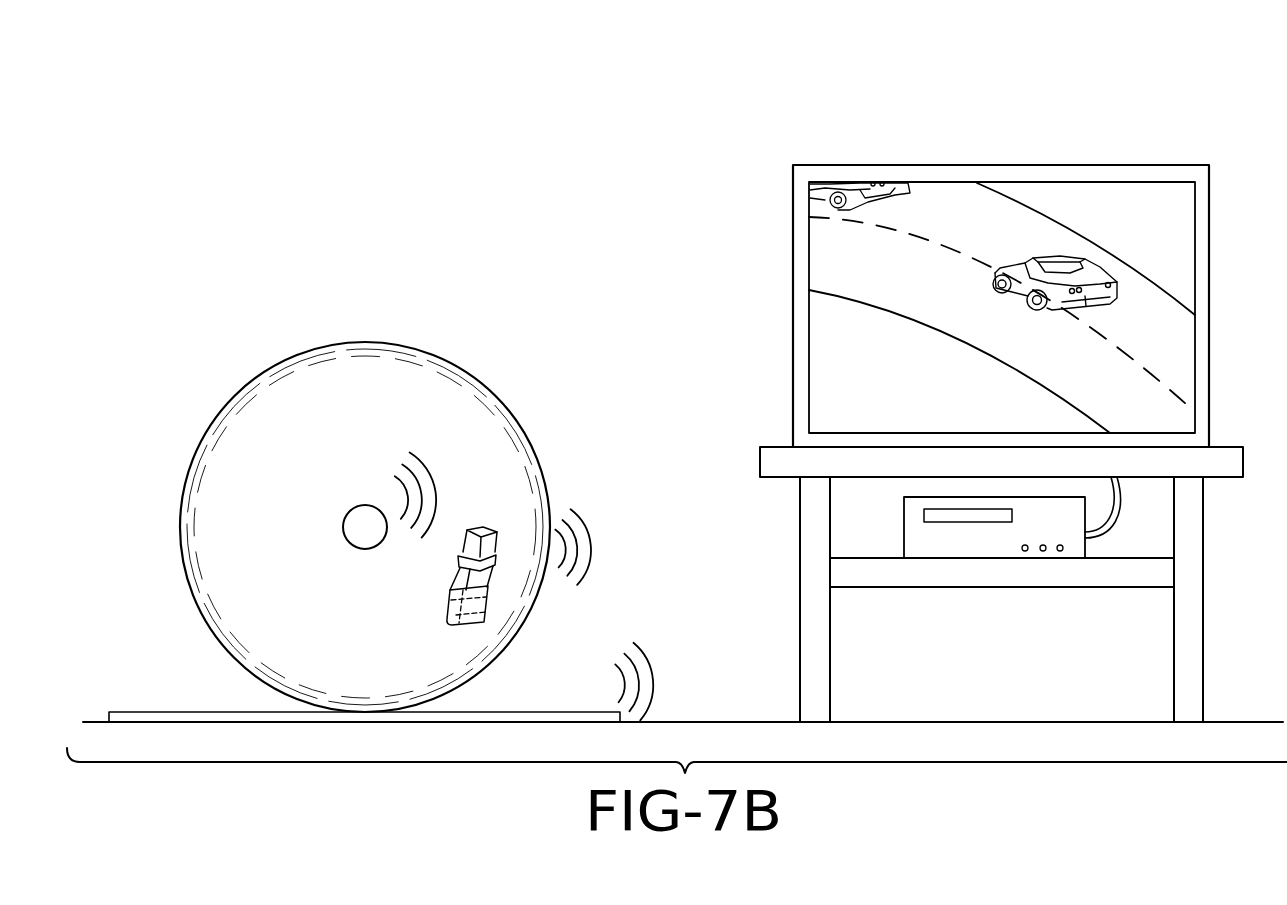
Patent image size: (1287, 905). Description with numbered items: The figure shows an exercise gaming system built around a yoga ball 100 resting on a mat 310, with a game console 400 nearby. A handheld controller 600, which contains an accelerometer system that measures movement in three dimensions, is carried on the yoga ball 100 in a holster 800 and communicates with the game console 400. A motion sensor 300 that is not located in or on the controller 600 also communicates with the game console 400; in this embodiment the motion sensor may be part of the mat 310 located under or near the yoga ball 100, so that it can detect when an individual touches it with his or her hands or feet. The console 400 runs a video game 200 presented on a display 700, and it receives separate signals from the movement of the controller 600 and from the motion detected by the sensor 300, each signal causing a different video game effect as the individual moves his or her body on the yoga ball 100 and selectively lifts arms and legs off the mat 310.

The yoga ball 100 is at (290, 408).
The motion sensor 300 is at (353, 522).
The mat 310 is at (138, 712).
The handheld controller 600 is at (483, 527).
The sensor mounting body 800 is at (485, 612).
The display frame 700 is at (848, 167).
The video game 200 is at (1080, 200).
The game console 400 is at (978, 542).